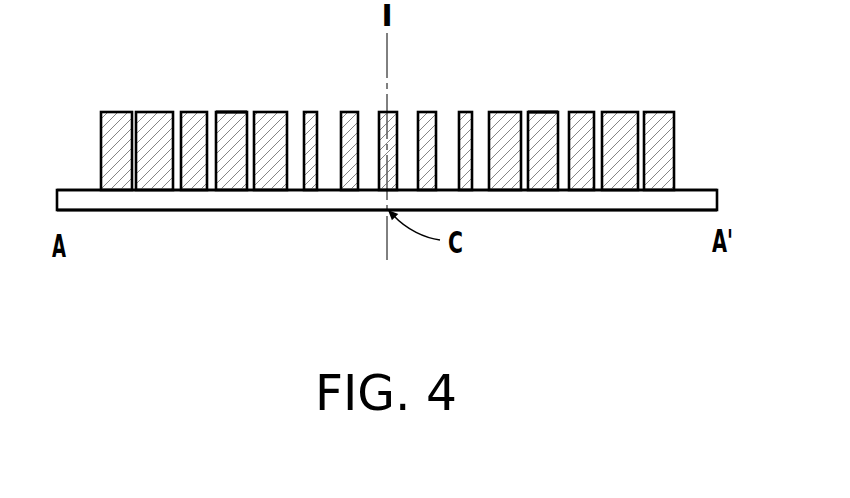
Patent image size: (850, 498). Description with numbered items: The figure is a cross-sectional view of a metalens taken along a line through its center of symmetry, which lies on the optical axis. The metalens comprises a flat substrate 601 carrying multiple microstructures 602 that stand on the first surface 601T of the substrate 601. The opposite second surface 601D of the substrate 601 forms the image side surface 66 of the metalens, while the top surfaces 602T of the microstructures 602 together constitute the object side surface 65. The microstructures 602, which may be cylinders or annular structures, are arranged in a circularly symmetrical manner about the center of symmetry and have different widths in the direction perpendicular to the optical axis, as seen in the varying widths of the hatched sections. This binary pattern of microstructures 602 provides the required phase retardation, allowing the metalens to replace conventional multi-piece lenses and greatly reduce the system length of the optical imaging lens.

The substrate 601 is at (708, 200).
The first surface 601T is at (703, 185).
The second surface 601D is at (632, 216).
The image side surface 66 is at (387, 261).
The microstructures 602 is at (113, 118).
The top surfaces 602T is at (231, 105).
The object side surface 65 is at (404, 63).